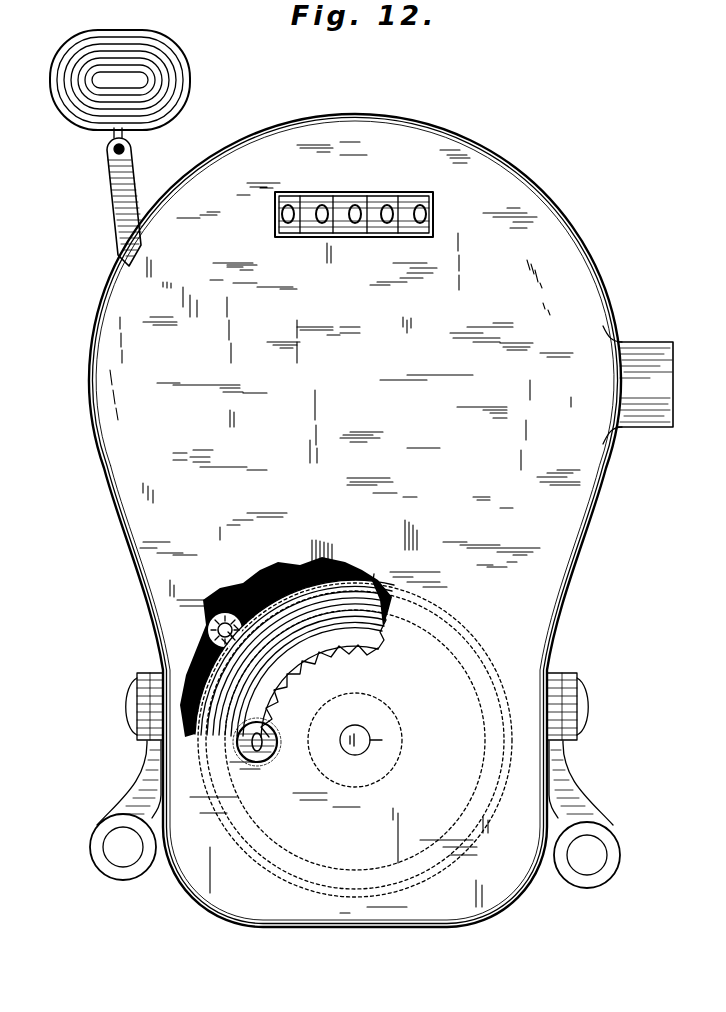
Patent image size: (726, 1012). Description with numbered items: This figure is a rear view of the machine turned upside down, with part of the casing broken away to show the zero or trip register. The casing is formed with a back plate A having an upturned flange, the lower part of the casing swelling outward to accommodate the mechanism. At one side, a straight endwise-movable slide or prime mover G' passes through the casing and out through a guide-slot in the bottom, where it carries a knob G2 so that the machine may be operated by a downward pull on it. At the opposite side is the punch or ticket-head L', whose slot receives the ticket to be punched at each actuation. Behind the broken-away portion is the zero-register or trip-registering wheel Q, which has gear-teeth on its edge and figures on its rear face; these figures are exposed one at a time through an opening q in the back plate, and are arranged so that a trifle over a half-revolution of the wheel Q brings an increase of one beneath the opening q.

The back plate A is at (355, 520).
The ticket-head L' is at (638, 385).
The knob G2 is at (120, 84).
The slide G' is at (115, 202).
The zero-register wheel Q is at (287, 647).
The opening q is at (262, 742).